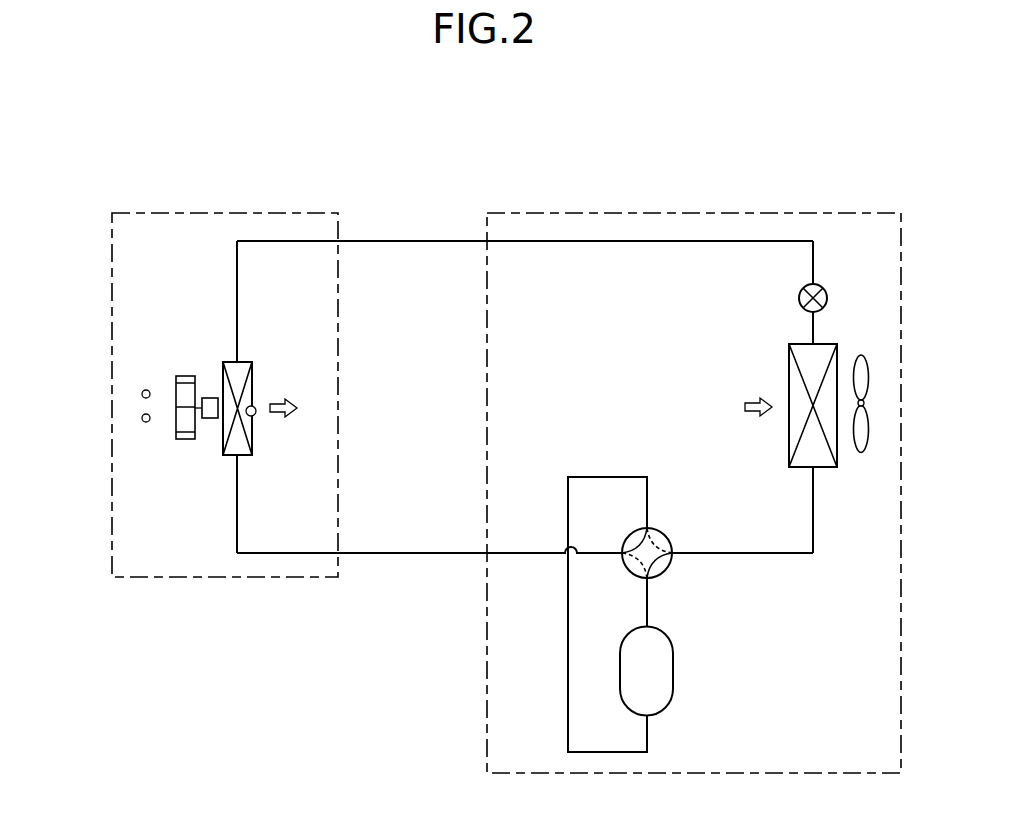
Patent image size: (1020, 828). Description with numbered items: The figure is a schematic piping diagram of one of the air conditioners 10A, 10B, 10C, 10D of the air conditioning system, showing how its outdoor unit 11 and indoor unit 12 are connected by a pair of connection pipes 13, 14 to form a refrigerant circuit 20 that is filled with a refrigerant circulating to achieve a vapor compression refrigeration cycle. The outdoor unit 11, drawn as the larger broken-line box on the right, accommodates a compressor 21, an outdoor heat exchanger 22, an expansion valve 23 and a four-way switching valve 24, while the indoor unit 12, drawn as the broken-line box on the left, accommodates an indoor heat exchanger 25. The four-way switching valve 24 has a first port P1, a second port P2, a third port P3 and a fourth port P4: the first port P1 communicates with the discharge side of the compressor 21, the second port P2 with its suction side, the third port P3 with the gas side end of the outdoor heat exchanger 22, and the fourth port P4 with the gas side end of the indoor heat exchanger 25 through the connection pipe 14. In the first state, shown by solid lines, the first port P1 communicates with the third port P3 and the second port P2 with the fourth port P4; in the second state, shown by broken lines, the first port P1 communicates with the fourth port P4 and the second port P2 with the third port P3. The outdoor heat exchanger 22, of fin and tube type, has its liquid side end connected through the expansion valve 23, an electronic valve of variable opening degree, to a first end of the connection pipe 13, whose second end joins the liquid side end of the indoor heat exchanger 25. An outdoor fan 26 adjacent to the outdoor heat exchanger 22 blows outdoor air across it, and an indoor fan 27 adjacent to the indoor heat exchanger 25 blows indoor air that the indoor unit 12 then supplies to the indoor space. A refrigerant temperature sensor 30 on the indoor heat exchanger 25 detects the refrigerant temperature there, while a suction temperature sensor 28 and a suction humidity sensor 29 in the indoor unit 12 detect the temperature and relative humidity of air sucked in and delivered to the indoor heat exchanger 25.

The air conditioner 10A is at (195, 182).
The air conditioner 10B is at (500, 493).
The air conditioner 10C is at (500, 493).
The air conditioner 10D is at (500, 493).
The outdoor unit 11 is at (901, 328).
The indoor unit 12 is at (111, 305).
The connection pipe 13 is at (437, 242).
The connection pipe 14 is at (438, 554).
The refrigerant circuit 20 is at (383, 230).
The compressor 21 is at (673, 648).
The outdoor heat exchanger 22 is at (789, 365).
The expansion valve 23 is at (799, 298).
The four-way switching valve 24 is at (660, 523).
The indoor heat exchanger 25 is at (252, 381).
The outdoor fan 26 is at (186, 440).
The indoor fan 27 is at (861, 453).
The suction temperature sensor 28 is at (146, 390).
The suction humidity sensor 29 is at (146, 422).
The refrigerant temperature sensor 30 is at (255, 415).
The first port P1 is at (648, 577).
The second port P2 is at (645, 529).
The third port P3 is at (673, 550).
The fourth port P4 is at (622, 555).